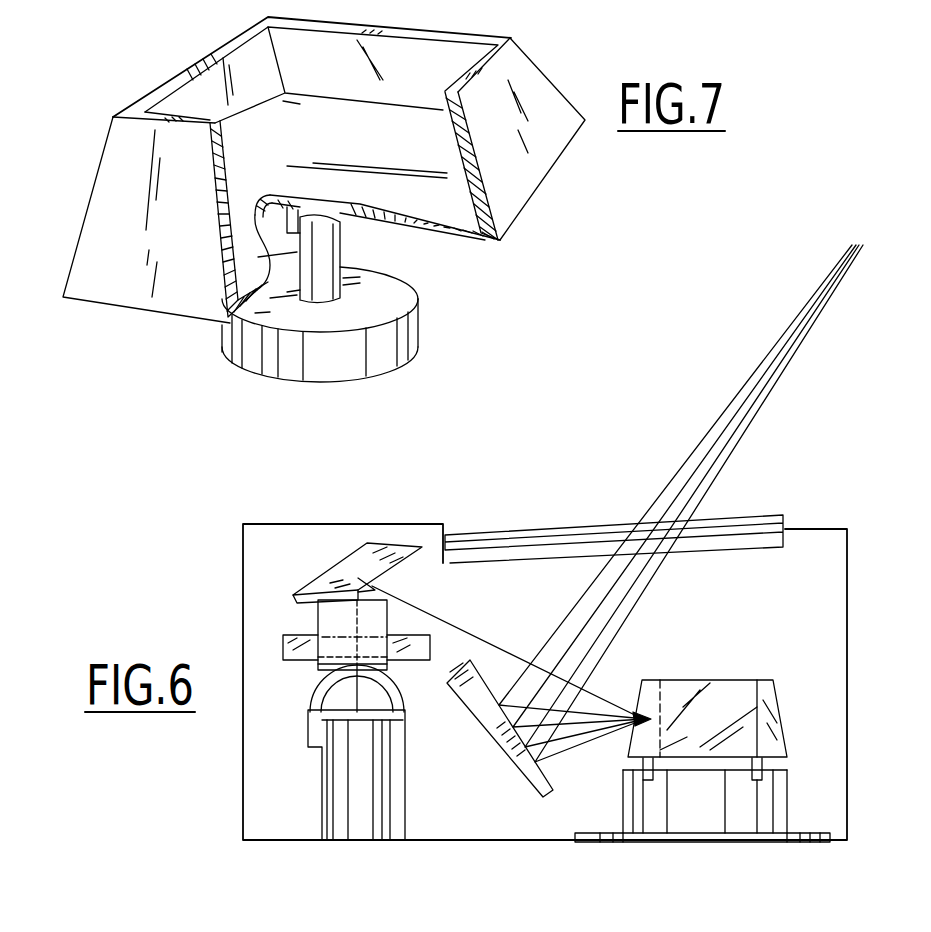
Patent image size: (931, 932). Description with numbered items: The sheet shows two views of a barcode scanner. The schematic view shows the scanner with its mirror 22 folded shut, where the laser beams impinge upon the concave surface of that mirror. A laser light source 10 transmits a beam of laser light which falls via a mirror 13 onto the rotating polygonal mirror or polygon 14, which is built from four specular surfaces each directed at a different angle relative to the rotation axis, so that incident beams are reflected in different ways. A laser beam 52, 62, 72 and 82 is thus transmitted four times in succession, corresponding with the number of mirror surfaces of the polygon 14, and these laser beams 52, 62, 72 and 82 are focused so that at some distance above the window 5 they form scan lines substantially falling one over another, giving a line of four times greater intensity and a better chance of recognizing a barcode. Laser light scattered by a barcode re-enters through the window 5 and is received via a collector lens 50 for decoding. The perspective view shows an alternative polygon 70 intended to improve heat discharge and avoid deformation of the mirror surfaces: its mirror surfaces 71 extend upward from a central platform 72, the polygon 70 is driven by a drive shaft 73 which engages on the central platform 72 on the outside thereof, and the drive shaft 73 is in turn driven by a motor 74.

In FIG. 7, the polygon 70 is at (566, 60).
In FIG. 7, the mirror surfaces 71 is at (120, 192).
In FIG. 7, the central platform 72 is at (420, 200).
In FIG. 6, the central platform 72 is at (587, 612).
In FIG. 7, the drive shaft 73 is at (323, 268).
In FIG. 7, the motor 74 is at (375, 347).
In FIG. 6, the window 5 is at (563, 535).
In FIG. 6, the mirror 13 is at (330, 570).
In FIG. 6, the collector lens 50 is at (318, 702).
In FIG. 6, the laser light source 10 is at (365, 817).
In FIG. 6, the mirror 22 is at (480, 702).
In FIG. 6, the polygon 14 is at (743, 690).
In FIG. 6, the laser beam 82 is at (590, 585).
In FIG. 6, the laser beam 62 is at (630, 588).
In FIG. 6, the laser beam 52 is at (622, 622).